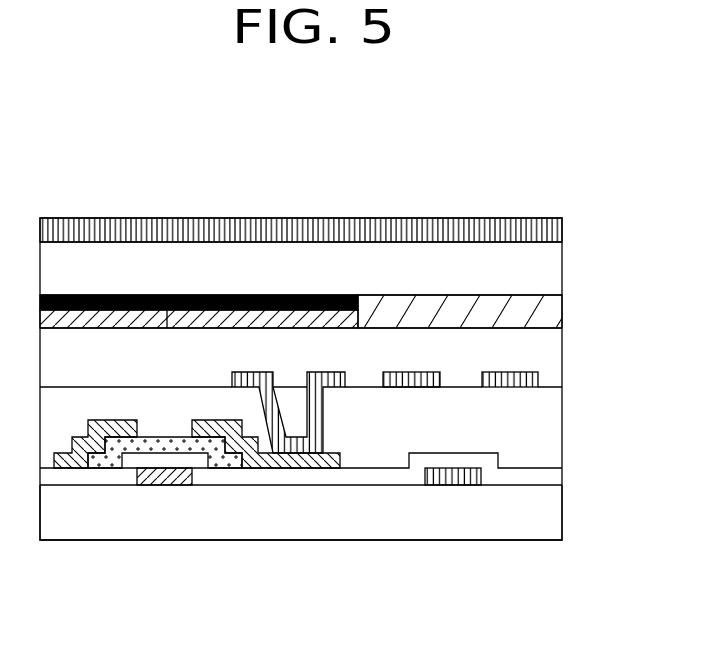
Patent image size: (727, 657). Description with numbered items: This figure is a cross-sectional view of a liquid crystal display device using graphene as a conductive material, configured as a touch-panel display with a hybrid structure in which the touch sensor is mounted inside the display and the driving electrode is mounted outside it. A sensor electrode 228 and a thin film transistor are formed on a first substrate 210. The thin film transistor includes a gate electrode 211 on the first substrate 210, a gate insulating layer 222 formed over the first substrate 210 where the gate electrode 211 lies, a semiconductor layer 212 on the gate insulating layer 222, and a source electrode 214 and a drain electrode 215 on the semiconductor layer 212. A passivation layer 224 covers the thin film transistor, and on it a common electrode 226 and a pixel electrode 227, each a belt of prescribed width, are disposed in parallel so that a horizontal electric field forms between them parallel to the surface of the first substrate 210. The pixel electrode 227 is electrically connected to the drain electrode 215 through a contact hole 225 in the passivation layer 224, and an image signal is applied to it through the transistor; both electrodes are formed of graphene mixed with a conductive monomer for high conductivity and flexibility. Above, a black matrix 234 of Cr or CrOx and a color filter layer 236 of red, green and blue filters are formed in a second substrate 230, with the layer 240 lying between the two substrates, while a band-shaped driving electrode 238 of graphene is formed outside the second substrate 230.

The first substrate 210 is at (557, 517).
The gate electrode 211 is at (164, 485).
The semiconductor layer 212 is at (220, 462).
The source electrode 214 is at (65, 457).
The drain electrode 215 is at (280, 468).
The gate insulating layer 222 is at (557, 477).
The passivation layer 224 is at (557, 408).
The contact hole 225 is at (292, 371).
The common electrode 226 is at (388, 388).
The pixel electrode 227 is at (540, 380).
The sensor electrode 228 is at (453, 485).
The second substrate 230 is at (557, 253).
The black matrix 234 is at (199, 295).
The color filter layer 236 is at (557, 313).
The driving electrode 238 is at (544, 218).
The liquid crystal layer 240 is at (557, 347).